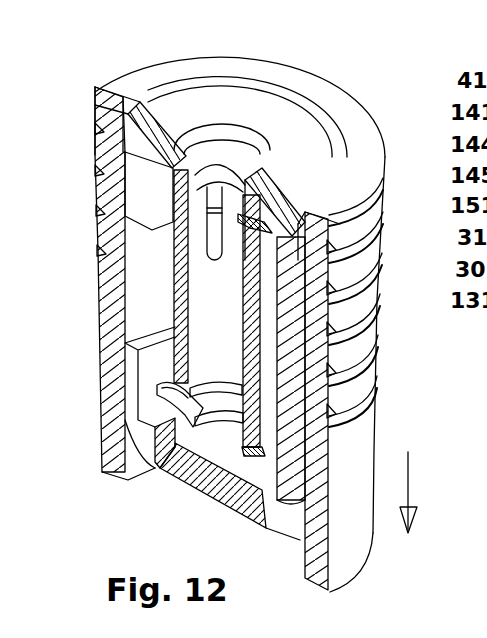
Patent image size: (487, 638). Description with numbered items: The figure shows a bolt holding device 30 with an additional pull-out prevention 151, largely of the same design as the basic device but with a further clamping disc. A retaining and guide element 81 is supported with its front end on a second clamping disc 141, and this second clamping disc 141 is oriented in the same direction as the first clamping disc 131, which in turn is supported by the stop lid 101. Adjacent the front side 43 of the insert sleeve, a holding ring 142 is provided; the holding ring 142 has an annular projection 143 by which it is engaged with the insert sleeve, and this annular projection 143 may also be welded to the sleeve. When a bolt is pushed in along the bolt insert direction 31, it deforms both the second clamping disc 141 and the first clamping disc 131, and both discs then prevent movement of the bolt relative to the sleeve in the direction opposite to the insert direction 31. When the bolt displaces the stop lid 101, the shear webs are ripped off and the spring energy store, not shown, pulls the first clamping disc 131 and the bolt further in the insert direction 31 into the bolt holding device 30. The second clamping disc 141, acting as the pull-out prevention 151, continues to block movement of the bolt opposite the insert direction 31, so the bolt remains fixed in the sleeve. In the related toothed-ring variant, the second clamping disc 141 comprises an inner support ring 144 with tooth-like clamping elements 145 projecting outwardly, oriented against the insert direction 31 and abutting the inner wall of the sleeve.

The bolt holding device 30 is at (388, 427).
The bolt insert direction 31 is at (408, 491).
The front side 43 is at (200, 75).
The retaining and guide element 81 is at (180, 286).
The stop lid 101 is at (208, 490).
The first clamping disc 131 is at (160, 398).
The second clamping disc 141 is at (173, 185).
The holding ring 142 is at (280, 194).
The annular projection 143 is at (127, 135).
The inner support ring 144 is at (163, 150).
The tooth-like clamping elements 145 is at (160, 188).
The pull-out prevention 151 is at (230, 168).